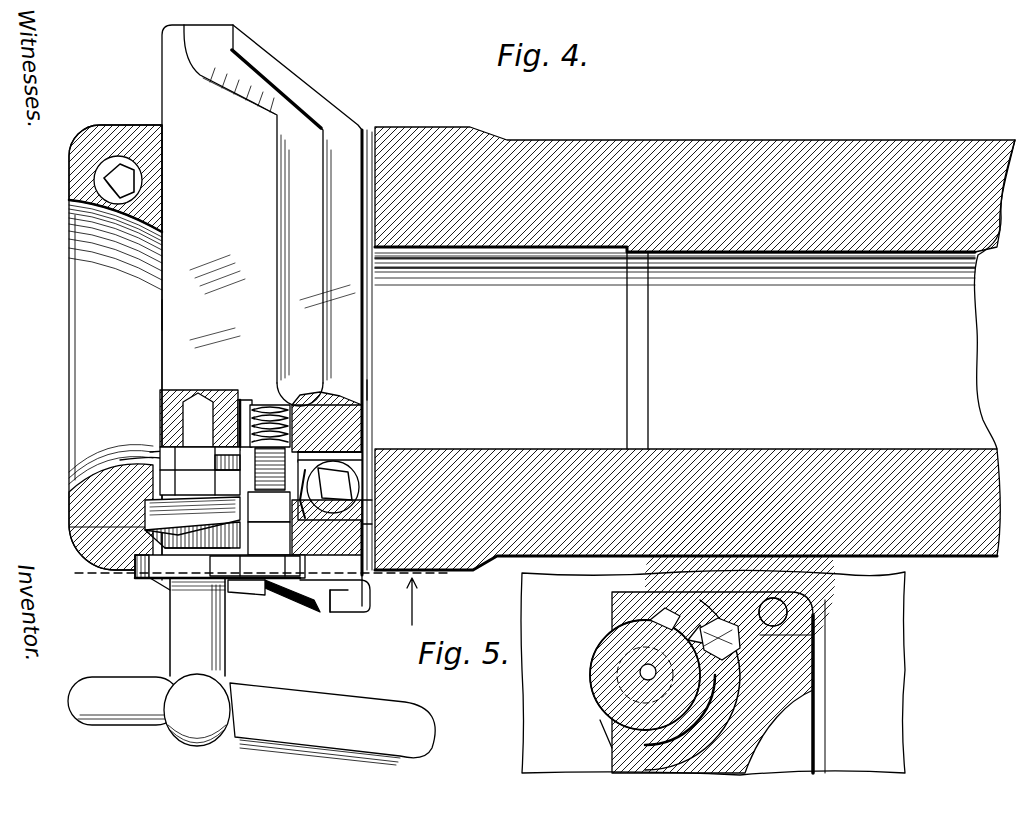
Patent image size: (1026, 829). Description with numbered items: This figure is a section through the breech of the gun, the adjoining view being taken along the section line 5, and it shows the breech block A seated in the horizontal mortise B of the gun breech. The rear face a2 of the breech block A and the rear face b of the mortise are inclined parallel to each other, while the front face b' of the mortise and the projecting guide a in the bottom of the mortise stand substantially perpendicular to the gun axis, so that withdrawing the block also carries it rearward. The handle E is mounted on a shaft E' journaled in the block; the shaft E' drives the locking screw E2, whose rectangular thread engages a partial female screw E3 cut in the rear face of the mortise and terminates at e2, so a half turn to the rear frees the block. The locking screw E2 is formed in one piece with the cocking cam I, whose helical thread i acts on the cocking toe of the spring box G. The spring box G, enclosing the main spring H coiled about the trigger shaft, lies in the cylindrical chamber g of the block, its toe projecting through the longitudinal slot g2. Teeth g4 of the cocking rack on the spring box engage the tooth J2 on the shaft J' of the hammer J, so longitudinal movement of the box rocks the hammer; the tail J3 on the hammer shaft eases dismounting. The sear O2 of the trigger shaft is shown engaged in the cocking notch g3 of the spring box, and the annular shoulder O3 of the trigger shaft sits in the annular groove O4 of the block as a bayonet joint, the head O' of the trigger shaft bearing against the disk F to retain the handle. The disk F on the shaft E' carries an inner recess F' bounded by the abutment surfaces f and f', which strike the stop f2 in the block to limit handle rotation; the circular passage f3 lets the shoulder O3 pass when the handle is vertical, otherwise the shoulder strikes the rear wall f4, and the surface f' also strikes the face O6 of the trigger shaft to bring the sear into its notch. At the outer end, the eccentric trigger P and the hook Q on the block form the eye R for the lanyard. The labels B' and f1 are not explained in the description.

In FIG. 4, the breech block A is at (588, 302).
In FIG. 5, the breech block A is at (800, 712).
In FIG. 4, the horizontal mortise B is at (115, 329).
In FIG. 4, the rear face of the mortise b is at (142, 180).
In FIG. 4, the rear face of the breech block a2 is at (160, 313).
In FIG. 4, the housing chamber B' is at (104, 360).
In FIG. 4, the longitudinal slot g2 is at (200, 398).
In FIG. 4, the cylindrical chamber g is at (243, 400).
In FIG. 4, the spring box G is at (270, 402).
In FIG. 4, the main spring H is at (318, 404).
In FIG. 4, the front face of the mortise b' is at (385, 394).
In FIG. 4, the teeth of the cocking rack g4 is at (318, 452).
In FIG. 4, the hammer J is at (342, 470).
In FIG. 4, the hammer shaft J' is at (405, 437).
In FIG. 4, the tooth of the hammer shaft J2 is at (372, 500).
In FIG. 4, the lug or tail of the hammer J3 is at (372, 524).
In FIG. 4, the cocking cam I is at (160, 452).
In FIG. 4, the helical thread of the cocking cam i is at (122, 460).
In FIG. 4, the termination of the locking screw thread e2 is at (220, 472).
In FIG. 4, the partial female screw E3 is at (145, 503).
In FIG. 4, the locking screw E2 is at (145, 530).
In FIG. 4, the sear O2 is at (269, 503).
In FIG. 4, the cocking notch g3 is at (305, 527).
In FIG. 4, the plate f1 is at (220, 564).
In FIG. 4, the annular shoulder of the trigger shaft O3 is at (255, 566).
In FIG. 5, the annular shoulder of the trigger shaft O3 is at (712, 628).
In FIG. 4, the section line 5 is at (256, 595).
In FIG. 4, the projecting hook Q is at (356, 606).
In FIG. 4, the projecting guide a is at (371, 593).
In FIG. 4, the eye or aperture R is at (335, 602).
In FIG. 4, the trigger P is at (302, 615).
In FIG. 4, the head of the trigger shaft O' is at (260, 618).
In FIG. 4, the disk F is at (175, 585).
In FIG. 5, the disk F is at (628, 675).
In FIG. 4, the recess of the disk F' is at (165, 617).
In FIG. 4, the rear wall of the disk recess f4 is at (228, 568).
In FIG. 5, the rear wall of the disk recess f4 is at (705, 742).
In FIG. 4, the handle shaft E' is at (197, 627).
In FIG. 4, the handle E is at (251, 719).
In FIG. 5, the abutment surface f is at (631, 645).
In FIG. 5, the abutment surface f' is at (595, 738).
In FIG. 5, the stop f2 is at (664, 615).
In FIG. 5, the circular passage f3 is at (720, 715).
In FIG. 5, the face of the trigger shaft O6 is at (768, 600).
In FIG. 5, the annular groove O4 is at (828, 636).